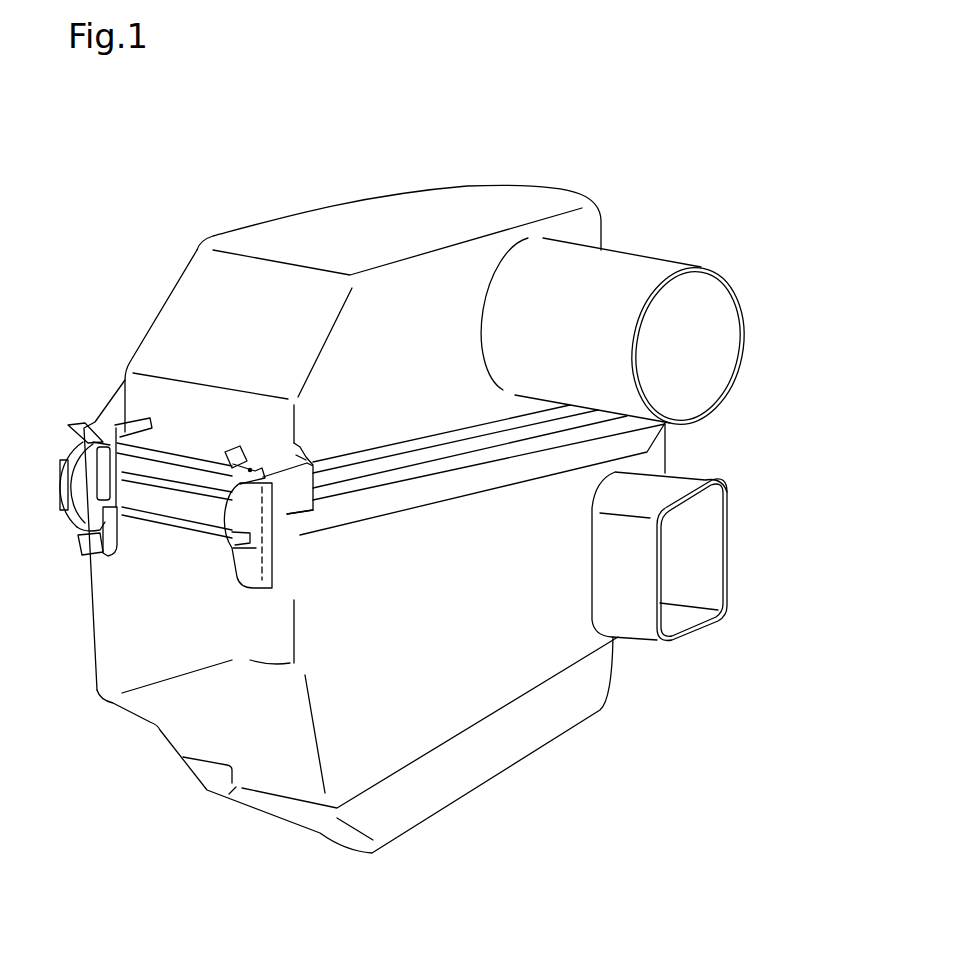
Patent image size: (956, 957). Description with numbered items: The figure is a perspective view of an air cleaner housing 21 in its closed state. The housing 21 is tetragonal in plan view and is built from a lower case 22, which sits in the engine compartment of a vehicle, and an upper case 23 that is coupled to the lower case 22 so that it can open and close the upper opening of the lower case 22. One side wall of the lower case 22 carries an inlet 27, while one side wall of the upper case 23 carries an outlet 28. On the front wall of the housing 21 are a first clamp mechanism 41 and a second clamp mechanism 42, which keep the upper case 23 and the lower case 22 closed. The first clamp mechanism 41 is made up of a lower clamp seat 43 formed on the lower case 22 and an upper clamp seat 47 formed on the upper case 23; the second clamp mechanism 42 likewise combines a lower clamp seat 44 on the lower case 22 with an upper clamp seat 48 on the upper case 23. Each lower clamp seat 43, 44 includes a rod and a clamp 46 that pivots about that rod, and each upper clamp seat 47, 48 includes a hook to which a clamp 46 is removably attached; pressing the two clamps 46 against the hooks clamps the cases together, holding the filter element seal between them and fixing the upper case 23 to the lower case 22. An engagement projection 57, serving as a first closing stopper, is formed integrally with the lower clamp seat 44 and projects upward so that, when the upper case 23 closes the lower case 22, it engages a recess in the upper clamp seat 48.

The air cleaner housing 21 is at (360, 198).
The lower case 22 is at (474, 786).
The upper case 23 is at (439, 199).
The inlet 27 is at (697, 632).
The outlet 28 is at (617, 268).
The first clamp mechanism 41 is at (79, 547).
The second clamp mechanism 42 is at (241, 582).
The lower clamp seat 43 is at (123, 550).
The lower clamp seat 44 is at (307, 593).
The clamp 46 is at (232, 450).
The upper clamp seat 47 is at (143, 440).
The upper clamp seat 48 is at (307, 478).
The engagement projection 57 is at (298, 533).